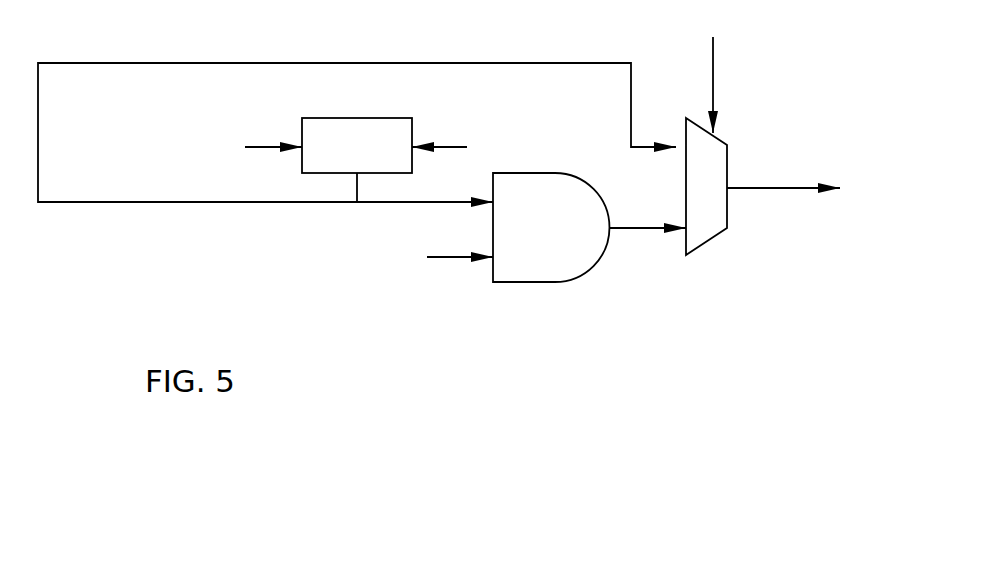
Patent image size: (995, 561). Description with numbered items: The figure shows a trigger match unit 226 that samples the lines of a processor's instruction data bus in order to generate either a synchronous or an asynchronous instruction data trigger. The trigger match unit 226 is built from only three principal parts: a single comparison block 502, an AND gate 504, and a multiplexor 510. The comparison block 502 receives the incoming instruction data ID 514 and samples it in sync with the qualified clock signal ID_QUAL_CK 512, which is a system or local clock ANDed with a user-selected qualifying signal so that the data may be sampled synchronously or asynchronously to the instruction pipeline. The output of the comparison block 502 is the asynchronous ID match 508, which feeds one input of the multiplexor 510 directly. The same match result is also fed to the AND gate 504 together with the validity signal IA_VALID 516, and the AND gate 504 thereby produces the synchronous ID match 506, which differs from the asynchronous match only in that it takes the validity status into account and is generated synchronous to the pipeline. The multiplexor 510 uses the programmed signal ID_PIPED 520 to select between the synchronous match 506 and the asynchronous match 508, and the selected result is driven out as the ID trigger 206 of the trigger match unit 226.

The trigger match unit 226 is at (152, 235).
The comparison block 502 is at (357, 160).
The AND gate 504 is at (551, 227).
The synchronous ID match 506 is at (645, 228).
The asynchronous ID match 508 is at (423, 63).
The multiplexor 510 is at (713, 238).
The ID_QUAL_CK qualified clock signal 512 is at (135, 120).
The ID incoming data 514 is at (493, 120).
The ID_VALID validity signal 516 is at (307, 260).
The ID_PIPED programmed signal 520 is at (715, 90).
The ID trigger output 206 is at (753, 188).